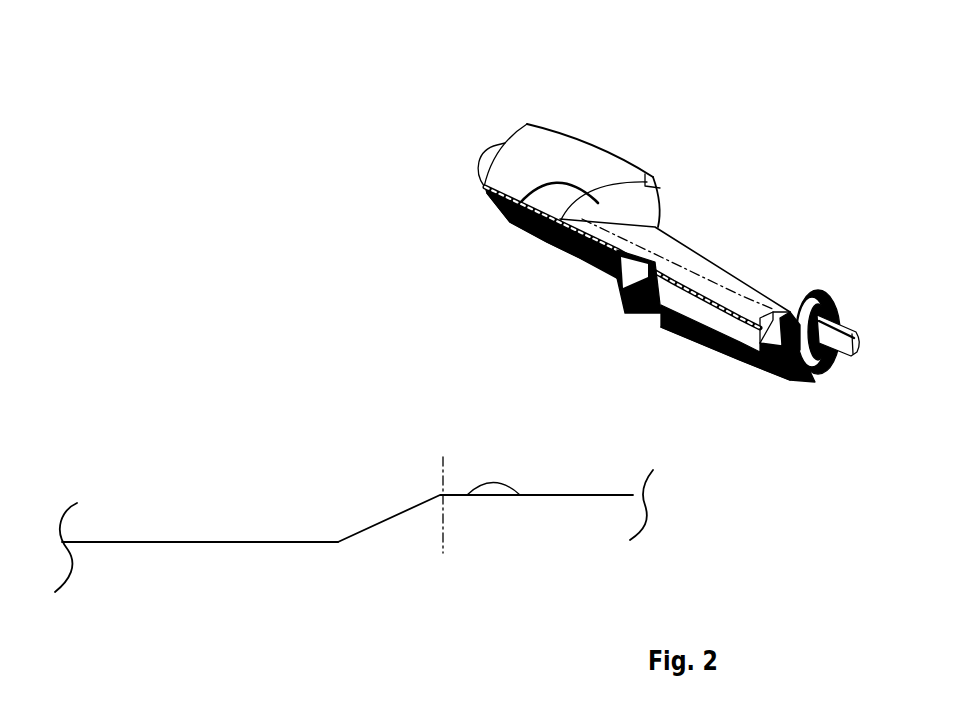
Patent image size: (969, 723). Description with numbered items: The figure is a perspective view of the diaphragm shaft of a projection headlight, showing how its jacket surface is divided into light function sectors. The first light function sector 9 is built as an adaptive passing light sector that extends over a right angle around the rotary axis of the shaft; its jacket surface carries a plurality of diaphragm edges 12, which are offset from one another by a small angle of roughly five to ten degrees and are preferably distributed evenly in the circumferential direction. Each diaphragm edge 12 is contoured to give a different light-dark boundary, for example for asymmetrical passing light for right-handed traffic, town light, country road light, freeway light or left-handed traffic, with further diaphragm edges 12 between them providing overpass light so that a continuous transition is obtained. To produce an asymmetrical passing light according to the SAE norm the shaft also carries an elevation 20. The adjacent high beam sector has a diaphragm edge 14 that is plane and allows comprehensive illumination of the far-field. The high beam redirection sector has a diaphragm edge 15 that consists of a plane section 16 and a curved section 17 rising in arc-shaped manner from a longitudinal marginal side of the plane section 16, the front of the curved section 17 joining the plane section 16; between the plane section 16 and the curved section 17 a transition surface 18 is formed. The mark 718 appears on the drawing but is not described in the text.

The first light function sector 9 is at (316, 602).
The diaphragm edges 12 is at (703, 341).
The diaphragm edge 14 is at (668, 196).
The diaphragm edge 15 is at (589, 101).
The plane section 16 is at (737, 290).
The curved section 17 is at (540, 145).
The transition surface 18 is at (508, 222).
The elevation 20 is at (627, 303).
The fastening element 718 is at (413, 188).